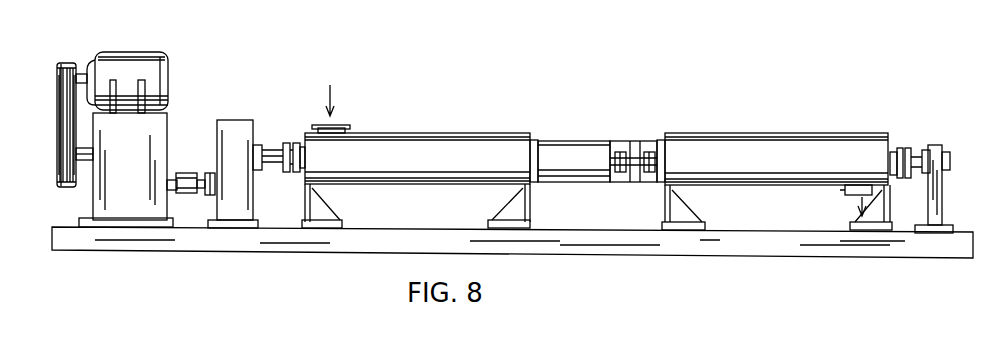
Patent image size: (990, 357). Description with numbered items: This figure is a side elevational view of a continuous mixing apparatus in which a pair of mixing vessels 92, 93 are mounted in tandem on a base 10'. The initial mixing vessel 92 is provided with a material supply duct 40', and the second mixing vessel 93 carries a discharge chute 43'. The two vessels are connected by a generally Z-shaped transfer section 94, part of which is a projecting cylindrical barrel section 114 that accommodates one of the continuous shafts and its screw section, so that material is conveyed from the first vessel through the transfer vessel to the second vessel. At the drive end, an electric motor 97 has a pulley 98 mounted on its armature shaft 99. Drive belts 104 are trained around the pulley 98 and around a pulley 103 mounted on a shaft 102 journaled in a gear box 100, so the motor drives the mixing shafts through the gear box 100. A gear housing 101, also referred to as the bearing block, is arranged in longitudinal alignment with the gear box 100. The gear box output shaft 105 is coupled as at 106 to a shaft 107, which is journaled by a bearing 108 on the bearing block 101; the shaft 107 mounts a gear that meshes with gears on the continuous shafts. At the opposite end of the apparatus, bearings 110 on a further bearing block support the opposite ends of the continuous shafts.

The base 10' is at (512, 258).
The material supply duct 40' is at (348, 109).
The discharge chute 43' is at (836, 203).
The mixing vessel 92 is at (468, 146).
The mixing vessel 93 is at (748, 138).
The transfer section 94 is at (594, 135).
The electric motor 97 is at (133, 64).
The pulley 98 is at (56, 70).
The armature shaft 99 is at (82, 74).
The gear box 100 is at (163, 126).
The gear housing 101 is at (246, 134).
The shaft 102 is at (86, 163).
The pulley 103 is at (57, 130).
The drive belts 104 is at (57, 100).
The gear box output shaft 105 is at (172, 178).
The coupling 106 is at (174, 175).
The shaft 107 is at (202, 188).
The bearing 108 is at (210, 173).
The bearings 110 is at (919, 152).
The barrel section 114 is at (556, 142).